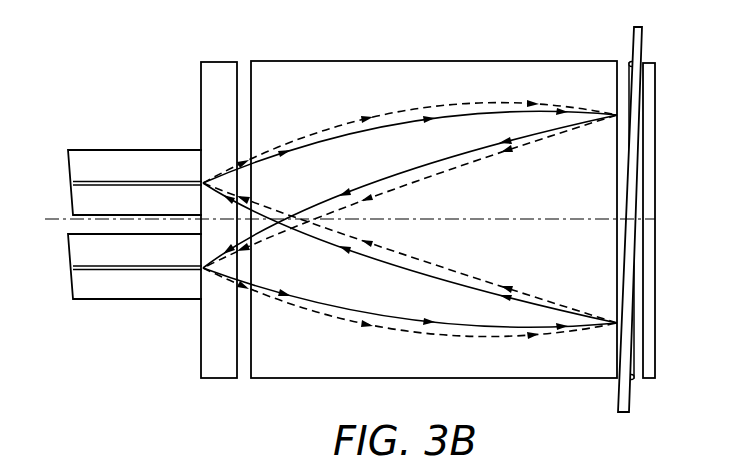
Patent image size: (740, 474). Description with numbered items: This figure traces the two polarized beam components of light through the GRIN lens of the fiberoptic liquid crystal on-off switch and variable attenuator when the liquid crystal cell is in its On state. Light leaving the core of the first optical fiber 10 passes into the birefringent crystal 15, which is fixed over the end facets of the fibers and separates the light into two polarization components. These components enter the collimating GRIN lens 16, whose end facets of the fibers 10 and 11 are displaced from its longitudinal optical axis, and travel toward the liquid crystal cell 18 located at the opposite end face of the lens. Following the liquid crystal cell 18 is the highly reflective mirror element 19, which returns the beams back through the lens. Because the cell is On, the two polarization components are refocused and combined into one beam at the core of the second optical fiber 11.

The optical fiber 10 is at (110, 143).
The optical fiber 11 is at (123, 307).
The birefringent crystal 15 is at (213, 100).
The collimating GRIN lens 16 is at (322, 80).
The liquid crystal cell 18 is at (630, 58).
The mirror element 19 is at (656, 170).